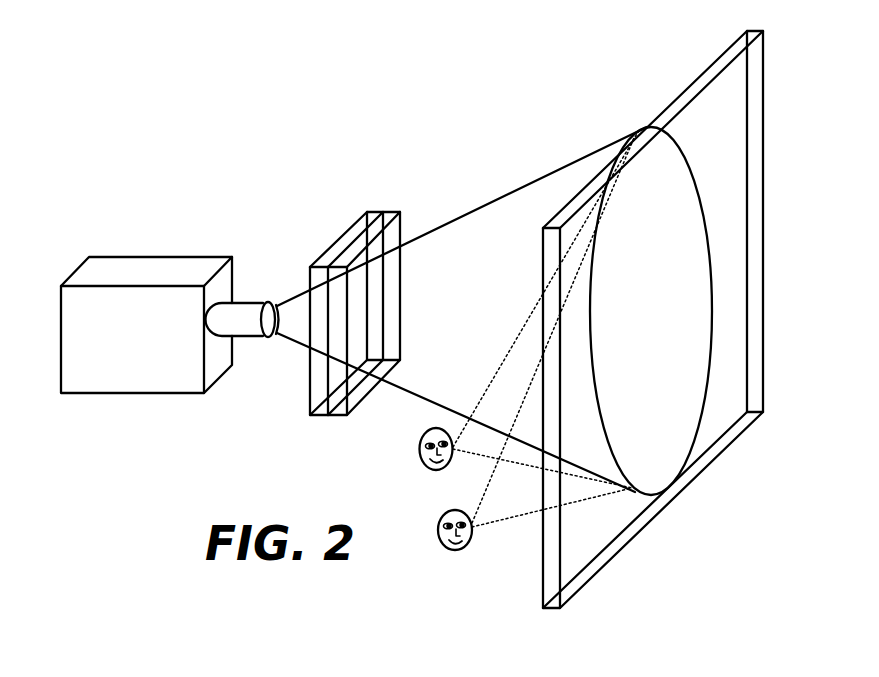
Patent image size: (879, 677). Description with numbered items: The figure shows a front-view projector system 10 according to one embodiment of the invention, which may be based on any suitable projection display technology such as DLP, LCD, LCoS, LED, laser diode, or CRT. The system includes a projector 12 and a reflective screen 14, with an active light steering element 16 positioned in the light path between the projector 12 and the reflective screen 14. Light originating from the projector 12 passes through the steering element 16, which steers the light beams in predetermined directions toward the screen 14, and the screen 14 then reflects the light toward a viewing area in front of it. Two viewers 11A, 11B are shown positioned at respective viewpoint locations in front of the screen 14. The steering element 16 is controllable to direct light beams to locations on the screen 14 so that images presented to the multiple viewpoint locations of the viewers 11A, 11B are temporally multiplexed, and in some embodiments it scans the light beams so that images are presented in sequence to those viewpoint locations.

The front-view projector system 10 is at (230, 141).
The projector 12 is at (143, 257).
The reflective screen 14 is at (687, 90).
The active light steering element 16 is at (388, 212).
The viewer 11A is at (443, 514).
The viewer 11B is at (420, 441).